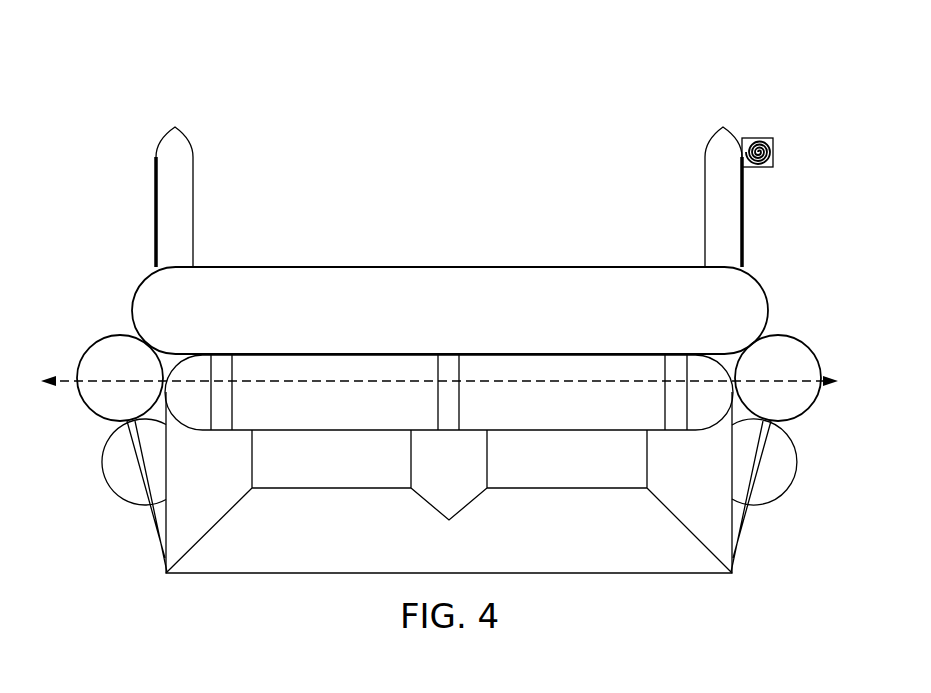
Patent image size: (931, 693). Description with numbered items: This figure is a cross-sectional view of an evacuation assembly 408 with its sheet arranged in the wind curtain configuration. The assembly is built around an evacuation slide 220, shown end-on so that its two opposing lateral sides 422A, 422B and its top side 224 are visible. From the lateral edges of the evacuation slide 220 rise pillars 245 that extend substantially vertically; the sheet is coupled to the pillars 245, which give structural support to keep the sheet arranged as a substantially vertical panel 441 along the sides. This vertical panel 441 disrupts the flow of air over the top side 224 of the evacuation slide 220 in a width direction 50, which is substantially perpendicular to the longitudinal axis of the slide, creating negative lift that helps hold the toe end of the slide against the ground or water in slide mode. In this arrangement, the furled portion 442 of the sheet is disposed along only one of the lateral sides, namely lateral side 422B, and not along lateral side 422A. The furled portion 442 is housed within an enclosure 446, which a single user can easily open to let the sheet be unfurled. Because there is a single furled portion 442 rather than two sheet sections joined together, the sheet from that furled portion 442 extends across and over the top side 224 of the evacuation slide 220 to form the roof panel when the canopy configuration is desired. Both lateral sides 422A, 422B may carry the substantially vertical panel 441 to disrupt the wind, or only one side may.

The evacuation assembly 408 is at (170, 54).
The top side 224 is at (371, 238).
The evacuation slide 220 is at (768, 322).
The mast 441 is at (156, 214).
The pillar 245 is at (181, 172).
The lateral side 422A is at (82, 262).
The lateral side 422B is at (810, 272).
The width direction 50 is at (107, 384).
The enclosure 446 is at (767, 137).
The furled portion 442 is at (773, 143).